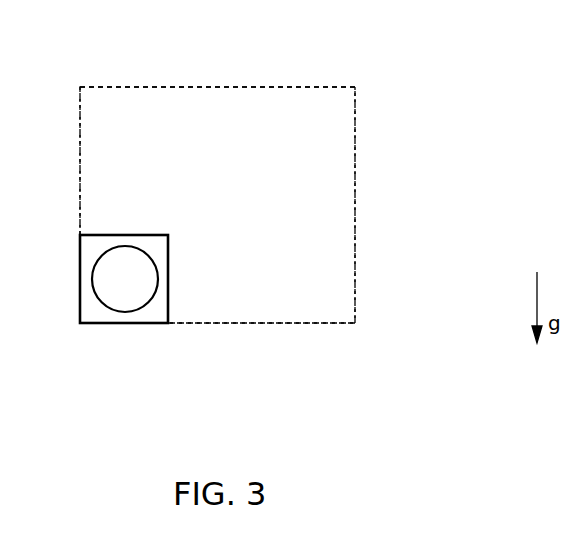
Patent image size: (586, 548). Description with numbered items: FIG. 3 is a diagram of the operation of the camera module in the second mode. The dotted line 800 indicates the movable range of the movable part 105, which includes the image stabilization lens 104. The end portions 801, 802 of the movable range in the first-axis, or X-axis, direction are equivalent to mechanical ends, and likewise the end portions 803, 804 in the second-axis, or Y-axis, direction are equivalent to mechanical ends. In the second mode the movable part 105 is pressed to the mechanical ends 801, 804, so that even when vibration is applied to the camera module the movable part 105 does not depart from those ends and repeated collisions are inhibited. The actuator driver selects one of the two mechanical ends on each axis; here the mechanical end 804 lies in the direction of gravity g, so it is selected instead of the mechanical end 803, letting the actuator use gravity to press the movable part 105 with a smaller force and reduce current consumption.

The dotted line 800 is at (327, 86).
The end portion 801 is at (78, 200).
The end portion 802 is at (357, 213).
The end portion 803 is at (118, 84).
The end portion 804 is at (298, 325).
The image stabilization lens 104 is at (125, 296).
The movable part 105 is at (163, 305).